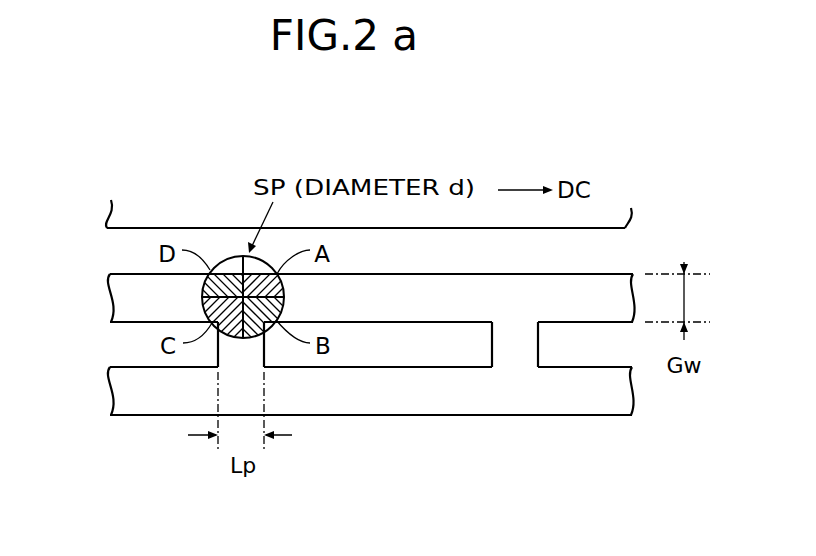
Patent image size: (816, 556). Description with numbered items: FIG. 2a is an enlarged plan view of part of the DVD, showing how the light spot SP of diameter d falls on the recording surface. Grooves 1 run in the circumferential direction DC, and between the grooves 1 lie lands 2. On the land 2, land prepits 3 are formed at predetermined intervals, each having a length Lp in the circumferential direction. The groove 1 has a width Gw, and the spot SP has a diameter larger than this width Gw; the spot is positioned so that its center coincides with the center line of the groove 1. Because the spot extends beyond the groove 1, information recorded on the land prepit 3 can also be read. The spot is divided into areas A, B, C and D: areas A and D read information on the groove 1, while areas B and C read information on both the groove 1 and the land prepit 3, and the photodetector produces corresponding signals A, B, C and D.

The groove 1 is at (126, 214).
The land 2 is at (128, 254).
The land prepit 3 is at (255, 348).